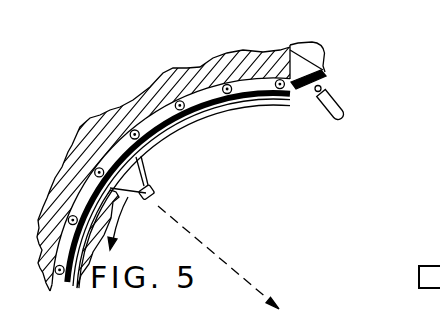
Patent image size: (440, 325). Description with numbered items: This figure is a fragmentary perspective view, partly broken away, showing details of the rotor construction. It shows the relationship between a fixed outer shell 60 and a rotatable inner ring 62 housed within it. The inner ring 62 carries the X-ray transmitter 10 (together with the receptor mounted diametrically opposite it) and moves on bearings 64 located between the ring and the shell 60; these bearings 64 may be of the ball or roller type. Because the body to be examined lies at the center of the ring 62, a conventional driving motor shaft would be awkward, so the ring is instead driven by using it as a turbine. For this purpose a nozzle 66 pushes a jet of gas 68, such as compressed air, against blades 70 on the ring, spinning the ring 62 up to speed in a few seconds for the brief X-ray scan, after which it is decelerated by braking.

The X-ray transmitter 10 is at (148, 172).
The fixed outer shell 60 is at (321, 48).
The rotatable inner ring 62 is at (240, 101).
The bearings 64 is at (201, 114).
The nozzle 66 is at (345, 107).
The jet of gas 68 is at (322, 87).
The blades 70 is at (287, 86).